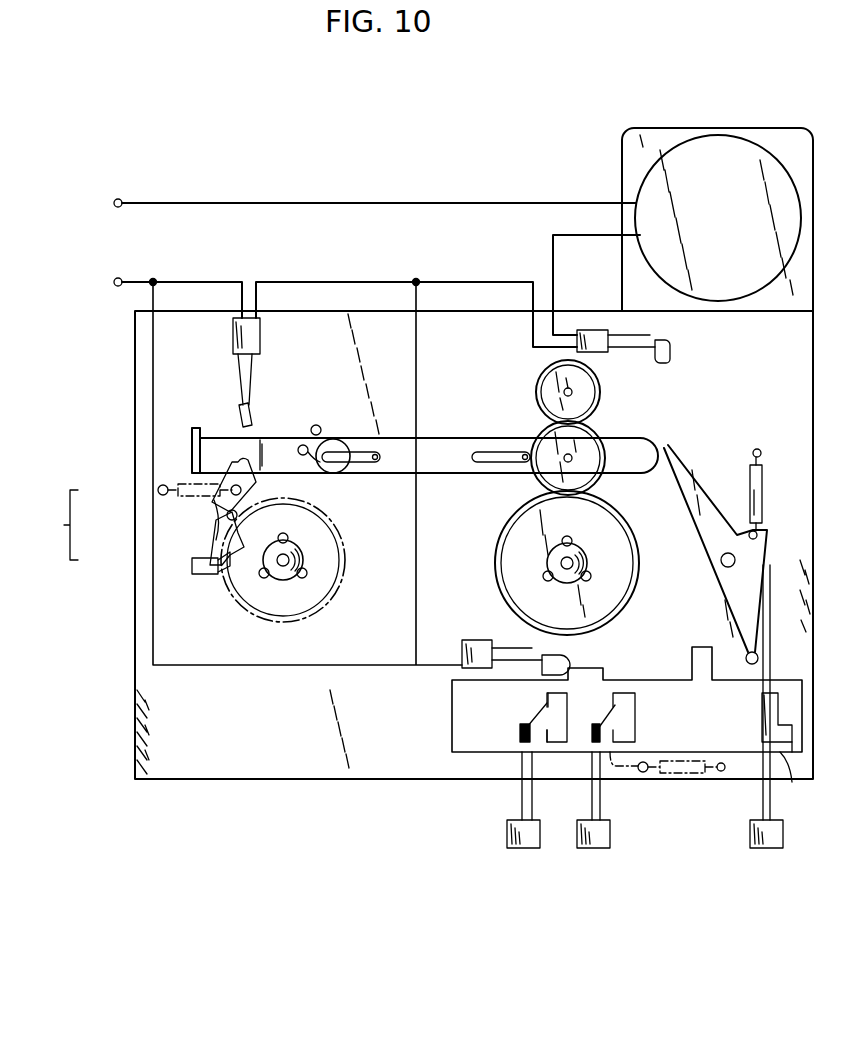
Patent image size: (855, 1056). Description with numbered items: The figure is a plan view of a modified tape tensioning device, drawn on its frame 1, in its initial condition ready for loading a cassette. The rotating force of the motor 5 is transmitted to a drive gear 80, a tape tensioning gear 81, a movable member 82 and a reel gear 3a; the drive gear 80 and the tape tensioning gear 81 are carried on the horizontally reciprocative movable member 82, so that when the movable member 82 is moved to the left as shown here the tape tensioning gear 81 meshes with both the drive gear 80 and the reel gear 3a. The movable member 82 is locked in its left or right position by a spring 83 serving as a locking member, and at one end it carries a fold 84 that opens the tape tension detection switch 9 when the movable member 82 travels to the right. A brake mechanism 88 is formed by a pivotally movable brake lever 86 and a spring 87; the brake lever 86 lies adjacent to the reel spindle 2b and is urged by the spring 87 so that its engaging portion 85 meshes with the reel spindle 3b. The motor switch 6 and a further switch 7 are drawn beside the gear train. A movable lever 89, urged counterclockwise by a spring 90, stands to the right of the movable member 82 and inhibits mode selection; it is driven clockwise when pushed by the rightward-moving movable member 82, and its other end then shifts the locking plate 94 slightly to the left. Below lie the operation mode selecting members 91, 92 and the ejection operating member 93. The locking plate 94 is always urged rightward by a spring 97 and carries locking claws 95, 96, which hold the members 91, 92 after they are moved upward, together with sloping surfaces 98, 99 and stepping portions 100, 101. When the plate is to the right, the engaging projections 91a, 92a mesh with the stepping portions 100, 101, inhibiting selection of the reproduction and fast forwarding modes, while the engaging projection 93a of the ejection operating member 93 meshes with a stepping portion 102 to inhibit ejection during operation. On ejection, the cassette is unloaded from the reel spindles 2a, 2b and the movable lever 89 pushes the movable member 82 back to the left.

The frame 1 is at (245, 781).
The reel spindle 2a is at (547, 560).
The reel spindle 2b is at (280, 582).
The reel gear 3a is at (517, 536).
The reel spindle 3b is at (318, 604).
The motor 5 is at (718, 302).
The motor switch 6 is at (476, 639).
The solenoid 7 is at (594, 330).
The tape tension detection switch 9 is at (262, 335).
The drive gear 80 is at (600, 387).
The tape tensioning gear 81 is at (605, 440).
The movable member 82 is at (458, 437).
The spring 83 is at (320, 430).
The fold 84 is at (195, 427).
The engaging portion 85 is at (216, 577).
The brake lever 86 is at (202, 529).
The spring 87 is at (158, 491).
The brake mechanism 88 is at (49, 525).
The movable lever 89 is at (700, 520).
The spring 90 is at (749, 460).
The operation mode selecting member 91 is at (507, 833).
The engaging projection 91a is at (530, 742).
The operation mode selecting member 92 is at (613, 828).
The engaging projection 92a is at (604, 744).
The ejection operating member 93 is at (753, 824).
The engaging projection 93a is at (760, 732).
The locking plate 94 is at (452, 716).
The locking claw 95 is at (548, 692).
The locking claw 96 is at (624, 693).
The spring 97 is at (668, 774).
The sloping surface 98 is at (544, 716).
The sloping surface 99 is at (628, 718).
The stepping portion 100 is at (518, 735).
The stepping portion 101 is at (608, 732).
The stepping portion 102 is at (780, 748).